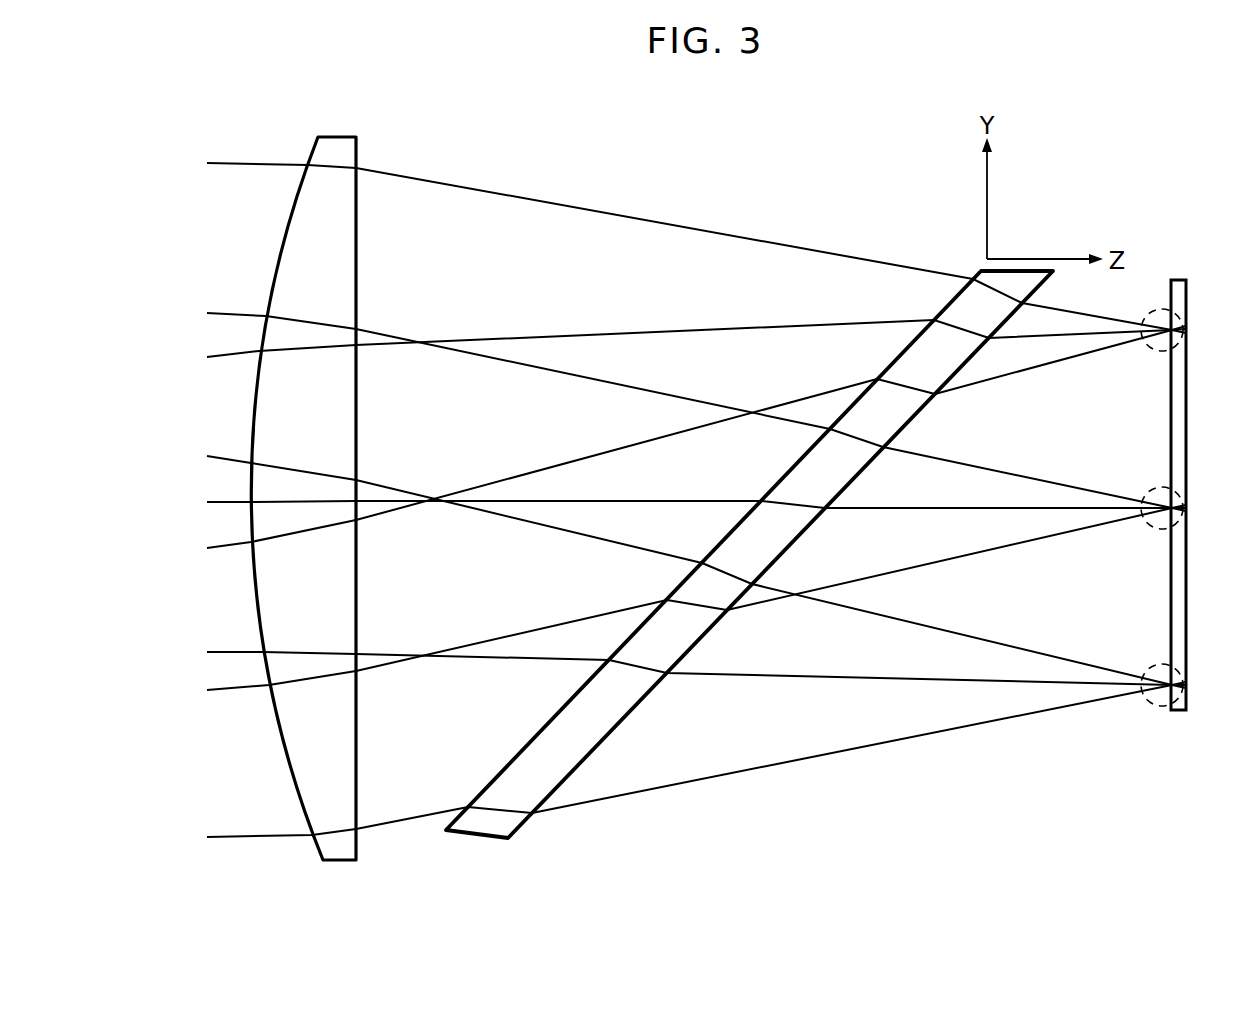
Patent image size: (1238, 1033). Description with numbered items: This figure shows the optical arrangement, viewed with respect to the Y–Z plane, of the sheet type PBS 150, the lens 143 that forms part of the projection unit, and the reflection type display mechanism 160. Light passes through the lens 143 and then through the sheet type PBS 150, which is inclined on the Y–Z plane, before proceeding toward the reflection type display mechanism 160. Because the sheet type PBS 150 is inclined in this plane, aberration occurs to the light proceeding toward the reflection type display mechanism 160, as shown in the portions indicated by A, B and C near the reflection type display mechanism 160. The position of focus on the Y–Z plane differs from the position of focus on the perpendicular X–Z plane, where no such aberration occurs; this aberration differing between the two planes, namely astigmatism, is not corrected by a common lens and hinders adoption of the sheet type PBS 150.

The lens 143 is at (336, 848).
The sheet type PBS 150 is at (491, 828).
The reflection type display mechanism 160 is at (1182, 712).
The portion indicating aberration A is at (1150, 705).
The portion indicating aberration B is at (1148, 527).
The portion indicating aberration C is at (1148, 348).